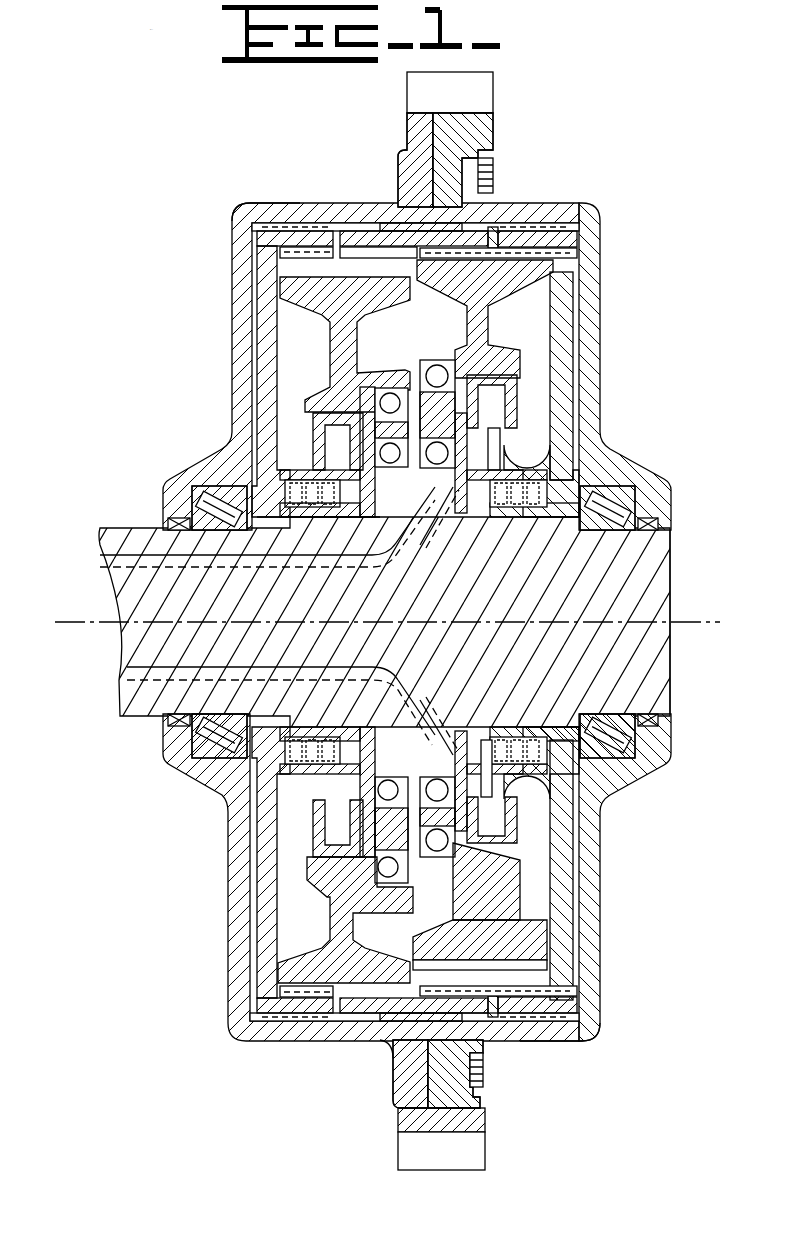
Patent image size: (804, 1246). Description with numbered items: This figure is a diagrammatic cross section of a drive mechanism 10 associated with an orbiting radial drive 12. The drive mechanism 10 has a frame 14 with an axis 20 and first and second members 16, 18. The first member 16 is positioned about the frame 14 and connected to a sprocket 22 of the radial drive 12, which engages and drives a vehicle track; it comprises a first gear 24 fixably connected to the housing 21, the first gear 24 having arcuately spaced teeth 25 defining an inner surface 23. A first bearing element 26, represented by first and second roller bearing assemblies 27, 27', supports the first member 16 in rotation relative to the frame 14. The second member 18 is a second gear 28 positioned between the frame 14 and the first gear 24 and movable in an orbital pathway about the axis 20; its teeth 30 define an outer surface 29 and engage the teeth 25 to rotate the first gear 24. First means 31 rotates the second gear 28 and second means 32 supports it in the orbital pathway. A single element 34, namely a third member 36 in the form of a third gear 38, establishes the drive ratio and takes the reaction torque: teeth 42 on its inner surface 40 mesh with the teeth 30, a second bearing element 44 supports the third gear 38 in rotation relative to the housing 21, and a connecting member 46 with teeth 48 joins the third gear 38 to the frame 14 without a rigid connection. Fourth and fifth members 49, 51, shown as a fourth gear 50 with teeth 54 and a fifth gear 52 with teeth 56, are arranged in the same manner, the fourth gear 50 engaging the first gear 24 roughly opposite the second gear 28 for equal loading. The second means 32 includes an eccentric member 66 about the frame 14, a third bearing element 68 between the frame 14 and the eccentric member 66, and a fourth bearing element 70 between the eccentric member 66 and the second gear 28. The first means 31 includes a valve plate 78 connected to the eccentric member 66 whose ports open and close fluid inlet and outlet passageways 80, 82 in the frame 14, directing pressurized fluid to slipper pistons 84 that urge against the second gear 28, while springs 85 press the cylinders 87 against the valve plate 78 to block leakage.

The drive mechanism 10 is at (106, 670).
The orbiting radial drive 12 is at (614, 63).
The frame 14 is at (562, 690).
The first member 16 is at (212, 186).
The second member 18 is at (287, 339).
The axis 20 is at (683, 598).
The housing 21 is at (273, 213).
The sprocket 22 is at (487, 86).
The inner surface 23 is at (306, 262).
The first gear 24 is at (347, 241).
The teeth 25 is at (486, 245).
The first bearing element 26 is at (638, 776).
The first roller bearing assembly 27 is at (167, 491).
The second roller bearing assembly 27' is at (640, 486).
The second gear 28 is at (350, 337).
The outer surface 29 is at (361, 245).
The teeth 30 is at (405, 293).
The first means 31 is at (313, 530).
The second means 32 is at (424, 413).
The single element 34 is at (241, 225).
The third member 36 is at (255, 195).
The third gear 38 is at (310, 232).
The inner surface 40 is at (232, 1004).
The teeth 42 is at (293, 997).
The second bearing element 44 is at (310, 1020).
The connecting member 46 is at (247, 870).
The teeth 48 is at (263, 990).
The fourth member 49 is at (522, 896).
The fourth gear 50 is at (523, 940).
The fifth member 51 is at (546, 1047).
The fifth gear 52 is at (577, 1010).
The teeth 54 is at (547, 968).
The teeth 56 is at (503, 995).
The eccentric member 66 is at (394, 838).
The third bearing element 68 is at (418, 760).
The fourth bearing element 70 is at (374, 906).
The valve plate 78 is at (405, 718).
The fluid inlet passageway 80 is at (328, 557).
The fluid outlet passageway 82 is at (410, 555).
The slipper pistons 84 is at (313, 430).
The springs 85 is at (300, 517).
The cylinders 87 is at (337, 513).